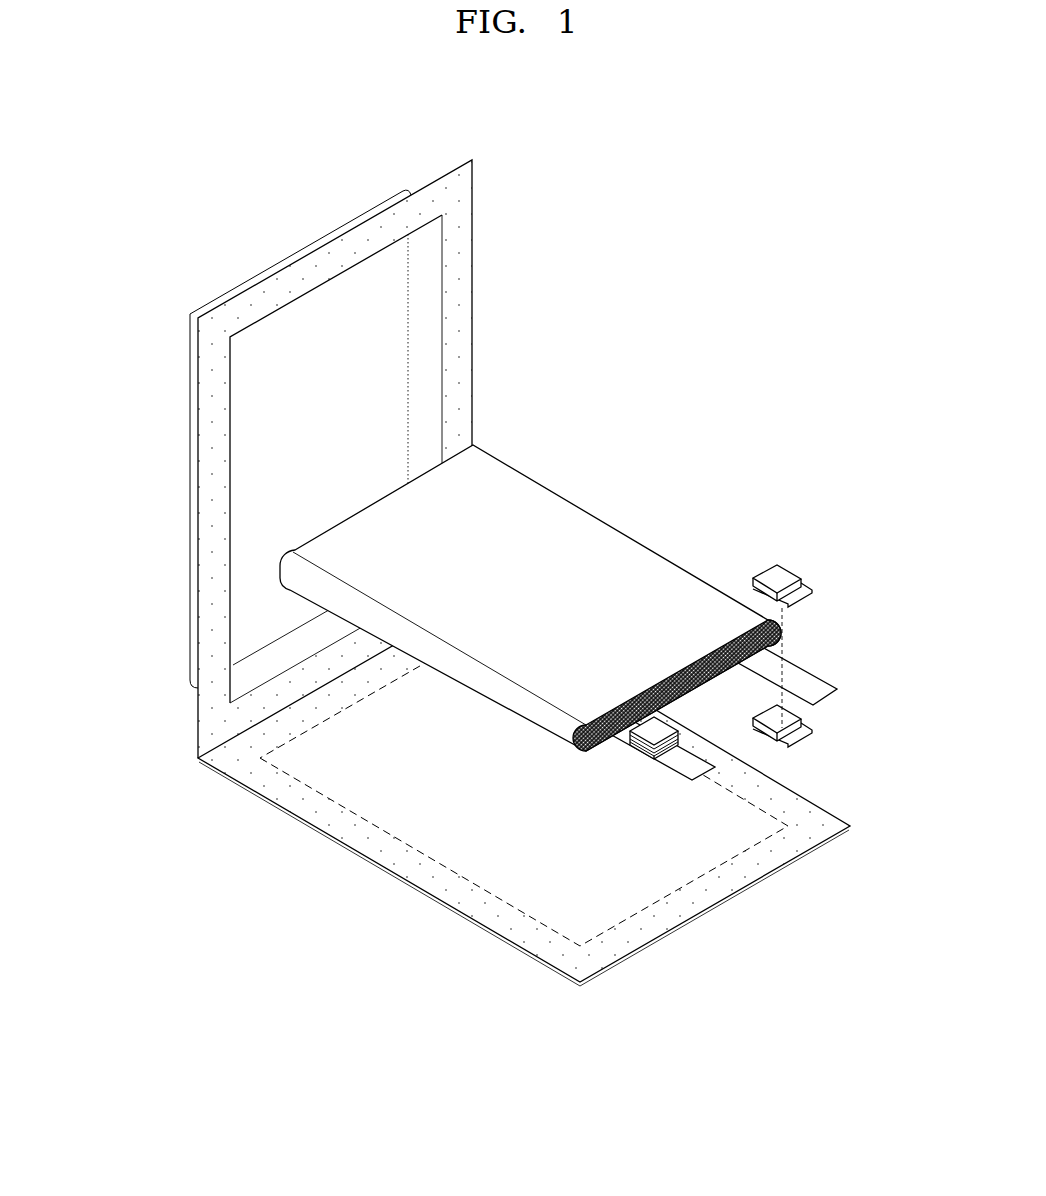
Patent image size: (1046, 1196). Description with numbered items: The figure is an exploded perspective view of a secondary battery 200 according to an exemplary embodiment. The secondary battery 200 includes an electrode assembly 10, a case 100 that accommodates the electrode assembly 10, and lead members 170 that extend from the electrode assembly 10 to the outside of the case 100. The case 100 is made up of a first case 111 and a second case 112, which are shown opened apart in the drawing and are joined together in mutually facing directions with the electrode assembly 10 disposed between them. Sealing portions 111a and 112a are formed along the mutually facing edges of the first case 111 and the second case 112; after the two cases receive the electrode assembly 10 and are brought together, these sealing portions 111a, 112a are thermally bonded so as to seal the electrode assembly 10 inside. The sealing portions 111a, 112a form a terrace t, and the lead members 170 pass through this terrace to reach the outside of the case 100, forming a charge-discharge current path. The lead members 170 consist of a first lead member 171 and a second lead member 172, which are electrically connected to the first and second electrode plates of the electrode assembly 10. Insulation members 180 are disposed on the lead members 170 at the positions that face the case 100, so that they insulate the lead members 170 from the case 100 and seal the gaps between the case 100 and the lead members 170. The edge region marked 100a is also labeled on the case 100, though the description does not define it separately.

The secondary battery 200 is at (498, 547).
The case 100 is at (467, 551).
The rim portion of case 100a is at (441, 176).
The first case 111 is at (477, 573).
The sealing portion 111a is at (464, 312).
The second case 112 is at (524, 791).
The sealing portion 112a is at (373, 845).
The terrace t is at (333, 258).
The electrode assembly 10 is at (605, 532).
The lead members 170 is at (766, 730).
The first lead member 171 is at (720, 773).
The second lead member 172 is at (820, 693).
The insulation members 180 is at (810, 566).